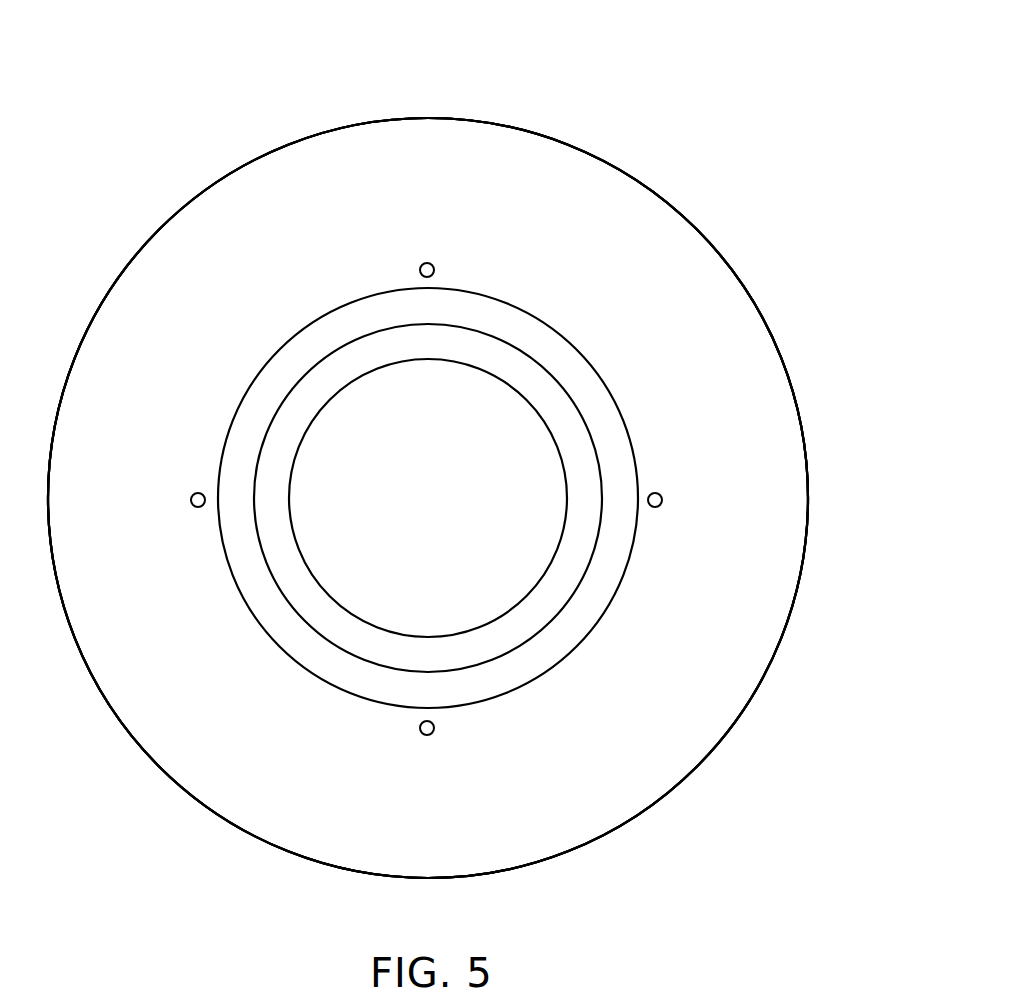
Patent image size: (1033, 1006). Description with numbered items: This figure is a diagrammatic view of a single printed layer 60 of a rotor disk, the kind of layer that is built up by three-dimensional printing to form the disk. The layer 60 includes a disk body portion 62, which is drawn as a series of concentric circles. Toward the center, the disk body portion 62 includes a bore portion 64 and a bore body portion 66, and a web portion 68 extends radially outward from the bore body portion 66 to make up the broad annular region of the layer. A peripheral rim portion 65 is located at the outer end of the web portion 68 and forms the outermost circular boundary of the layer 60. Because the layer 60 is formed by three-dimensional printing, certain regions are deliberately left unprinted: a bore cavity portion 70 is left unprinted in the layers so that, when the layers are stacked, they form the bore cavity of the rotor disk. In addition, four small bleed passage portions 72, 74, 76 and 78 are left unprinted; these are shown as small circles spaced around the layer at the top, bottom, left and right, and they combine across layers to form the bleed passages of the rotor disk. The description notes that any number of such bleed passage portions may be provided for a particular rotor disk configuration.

The layer 60 is at (652, 100).
The disk body portion 62 is at (735, 436).
The bore portion 64 is at (297, 602).
The peripheral rim portion 65 is at (264, 181).
The bore body portion 66 is at (447, 632).
The web portion 68 is at (633, 268).
The bore cavity portion 70 is at (474, 310).
The bleed passage portion 72 is at (432, 250).
The bleed passage portion 74 is at (432, 746).
The bleed passage portion 76 is at (180, 496).
The bleed passage portion 78 is at (676, 495).